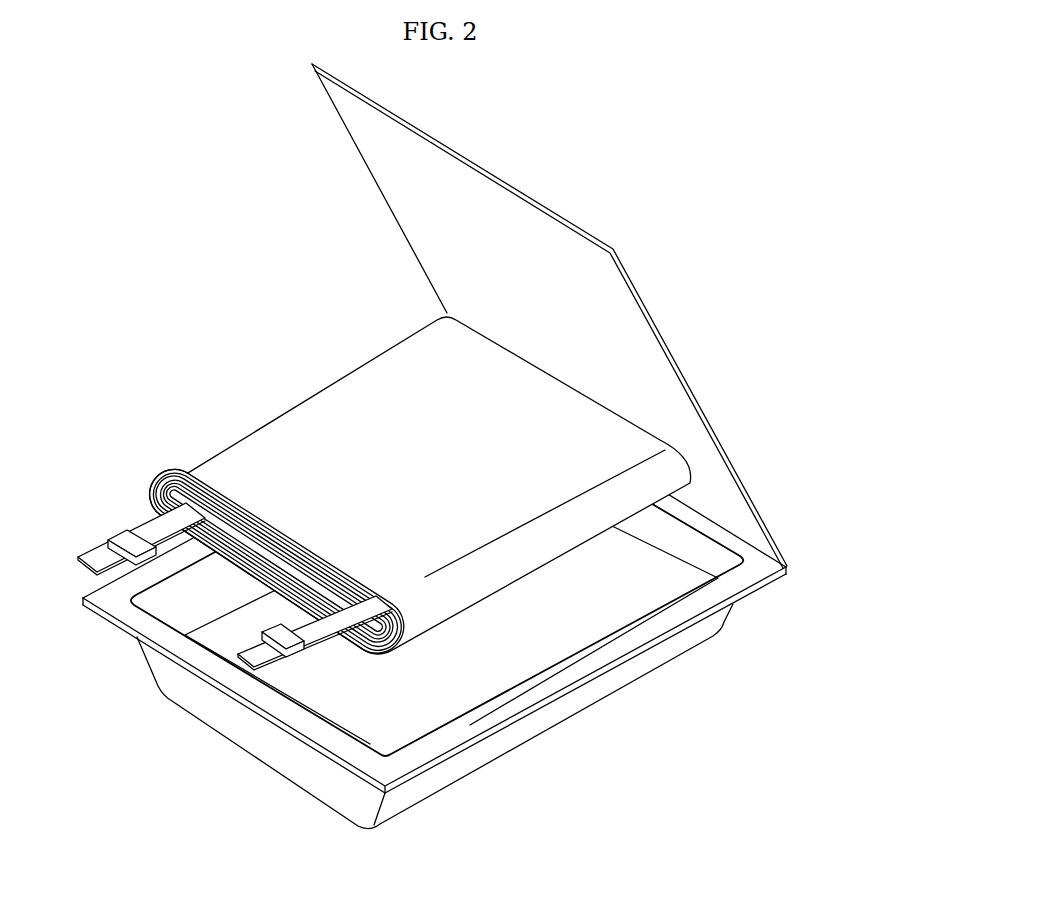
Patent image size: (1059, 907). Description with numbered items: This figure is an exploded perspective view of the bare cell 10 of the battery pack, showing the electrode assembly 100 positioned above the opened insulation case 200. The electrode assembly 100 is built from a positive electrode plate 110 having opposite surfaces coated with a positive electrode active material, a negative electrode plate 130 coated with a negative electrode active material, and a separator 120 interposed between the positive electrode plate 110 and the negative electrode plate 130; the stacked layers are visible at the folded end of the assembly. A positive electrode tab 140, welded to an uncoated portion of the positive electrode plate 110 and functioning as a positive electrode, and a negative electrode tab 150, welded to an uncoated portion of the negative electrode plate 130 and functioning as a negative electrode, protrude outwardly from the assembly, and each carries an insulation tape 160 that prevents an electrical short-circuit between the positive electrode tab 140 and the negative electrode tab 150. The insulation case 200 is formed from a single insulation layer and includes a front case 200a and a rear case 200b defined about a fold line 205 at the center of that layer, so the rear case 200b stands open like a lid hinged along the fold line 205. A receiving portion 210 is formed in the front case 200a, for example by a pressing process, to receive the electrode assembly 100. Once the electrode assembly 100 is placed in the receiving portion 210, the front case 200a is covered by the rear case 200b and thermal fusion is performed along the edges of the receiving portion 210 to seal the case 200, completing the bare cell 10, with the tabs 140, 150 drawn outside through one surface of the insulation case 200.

The bare cell 10 is at (465, 463).
The electrode assembly 100 is at (360, 590).
The positive electrode plate 110 is at (157, 470).
The separator 120 is at (157, 477).
The negative electrode plate 130 is at (150, 497).
The positive electrode tab 140 is at (310, 620).
The negative electrode tab 150 is at (117, 577).
The insulation tape 160 is at (123, 533).
The insulation case 200 is at (492, 446).
The front case 200a is at (467, 604).
The rear case 200b is at (750, 523).
The fold line 205 is at (713, 523).
The receiving portion 210 is at (545, 638).